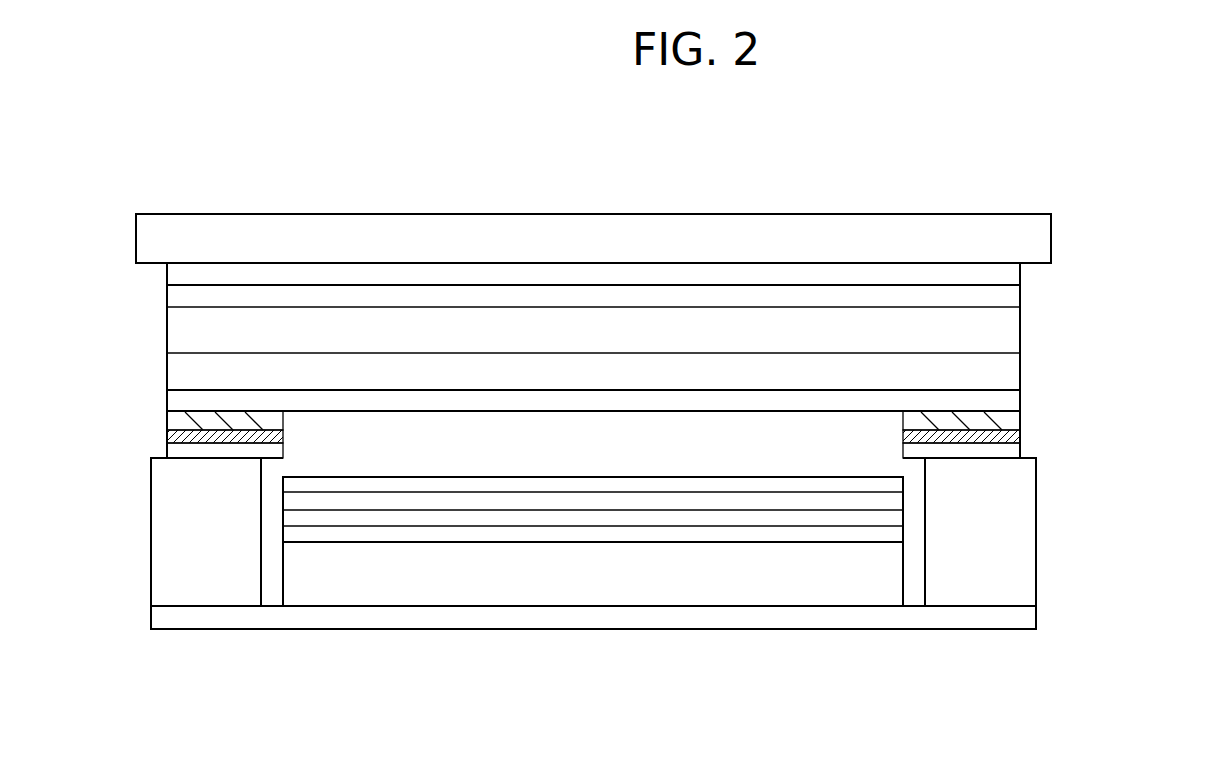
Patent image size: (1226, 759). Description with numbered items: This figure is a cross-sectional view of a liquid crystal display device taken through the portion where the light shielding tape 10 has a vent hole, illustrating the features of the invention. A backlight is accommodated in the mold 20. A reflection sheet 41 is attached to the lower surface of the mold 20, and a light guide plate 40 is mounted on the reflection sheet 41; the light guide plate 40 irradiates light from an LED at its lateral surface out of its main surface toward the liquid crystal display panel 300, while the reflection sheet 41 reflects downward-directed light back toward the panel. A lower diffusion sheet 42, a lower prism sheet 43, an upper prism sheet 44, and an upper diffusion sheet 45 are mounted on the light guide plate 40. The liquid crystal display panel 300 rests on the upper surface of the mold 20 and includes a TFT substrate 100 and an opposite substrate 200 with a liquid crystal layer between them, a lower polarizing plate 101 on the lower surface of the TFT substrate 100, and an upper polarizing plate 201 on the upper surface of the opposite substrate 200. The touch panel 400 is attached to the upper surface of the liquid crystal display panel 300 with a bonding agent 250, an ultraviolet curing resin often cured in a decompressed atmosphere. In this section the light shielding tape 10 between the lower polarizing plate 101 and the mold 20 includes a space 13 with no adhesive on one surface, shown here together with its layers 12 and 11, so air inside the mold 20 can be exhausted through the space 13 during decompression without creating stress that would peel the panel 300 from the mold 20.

The touch panel 400 is at (962, 222).
The bonding agent 250 is at (823, 278).
The upper polarizing plate 201 is at (670, 295).
The opposite substrate 200 is at (1003, 325).
The TFT substrate 100 is at (1003, 368).
The lower polarizing plate 101 is at (1005, 400).
The liquid crystal display panel 300 is at (685, 305).
The light shielding tape 10 is at (674, 454).
The first layer 12 is at (1022, 418).
The second layer 11 is at (1022, 443).
The space 13 is at (643, 471).
The mold 20 is at (1027, 547).
The light guide plate 40 is at (782, 593).
The reflection sheet 41 is at (886, 622).
The lower diffusion sheet 42 is at (685, 533).
The lower prism sheet 43 is at (618, 520).
The upper prism sheet 44 is at (533, 502).
The upper diffusion sheet 45 is at (438, 485).